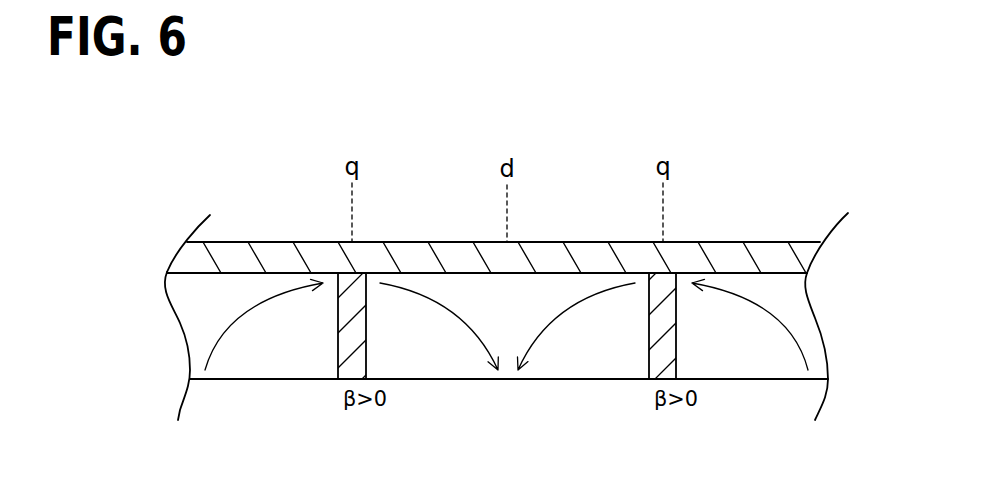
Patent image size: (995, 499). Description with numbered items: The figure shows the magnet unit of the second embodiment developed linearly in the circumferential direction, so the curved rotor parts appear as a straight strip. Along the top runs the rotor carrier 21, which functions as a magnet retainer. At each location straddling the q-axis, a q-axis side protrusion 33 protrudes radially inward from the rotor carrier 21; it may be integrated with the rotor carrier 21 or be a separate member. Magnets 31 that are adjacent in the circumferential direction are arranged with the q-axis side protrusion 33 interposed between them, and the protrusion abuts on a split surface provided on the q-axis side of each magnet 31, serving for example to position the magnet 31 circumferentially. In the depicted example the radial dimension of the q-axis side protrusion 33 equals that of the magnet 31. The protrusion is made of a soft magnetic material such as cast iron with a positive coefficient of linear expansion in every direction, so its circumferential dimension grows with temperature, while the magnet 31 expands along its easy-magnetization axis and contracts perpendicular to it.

The rotor carrier 21 is at (764, 242).
The magnet 31 is at (235, 380).
The q-axis side protrusion 33 is at (338, 348).